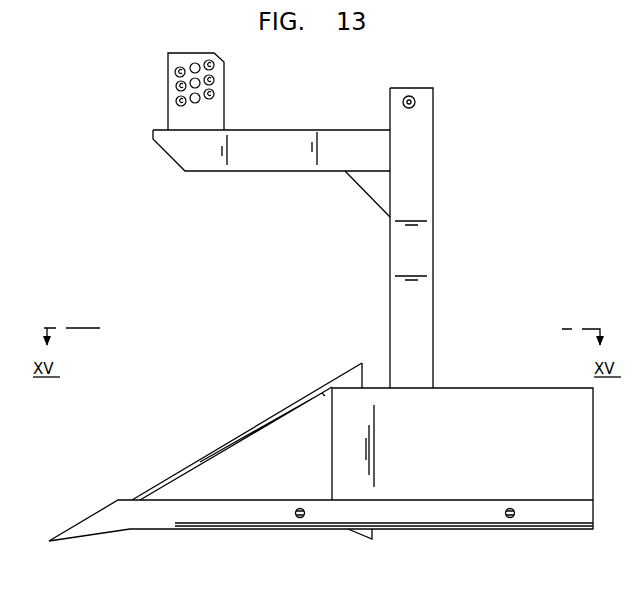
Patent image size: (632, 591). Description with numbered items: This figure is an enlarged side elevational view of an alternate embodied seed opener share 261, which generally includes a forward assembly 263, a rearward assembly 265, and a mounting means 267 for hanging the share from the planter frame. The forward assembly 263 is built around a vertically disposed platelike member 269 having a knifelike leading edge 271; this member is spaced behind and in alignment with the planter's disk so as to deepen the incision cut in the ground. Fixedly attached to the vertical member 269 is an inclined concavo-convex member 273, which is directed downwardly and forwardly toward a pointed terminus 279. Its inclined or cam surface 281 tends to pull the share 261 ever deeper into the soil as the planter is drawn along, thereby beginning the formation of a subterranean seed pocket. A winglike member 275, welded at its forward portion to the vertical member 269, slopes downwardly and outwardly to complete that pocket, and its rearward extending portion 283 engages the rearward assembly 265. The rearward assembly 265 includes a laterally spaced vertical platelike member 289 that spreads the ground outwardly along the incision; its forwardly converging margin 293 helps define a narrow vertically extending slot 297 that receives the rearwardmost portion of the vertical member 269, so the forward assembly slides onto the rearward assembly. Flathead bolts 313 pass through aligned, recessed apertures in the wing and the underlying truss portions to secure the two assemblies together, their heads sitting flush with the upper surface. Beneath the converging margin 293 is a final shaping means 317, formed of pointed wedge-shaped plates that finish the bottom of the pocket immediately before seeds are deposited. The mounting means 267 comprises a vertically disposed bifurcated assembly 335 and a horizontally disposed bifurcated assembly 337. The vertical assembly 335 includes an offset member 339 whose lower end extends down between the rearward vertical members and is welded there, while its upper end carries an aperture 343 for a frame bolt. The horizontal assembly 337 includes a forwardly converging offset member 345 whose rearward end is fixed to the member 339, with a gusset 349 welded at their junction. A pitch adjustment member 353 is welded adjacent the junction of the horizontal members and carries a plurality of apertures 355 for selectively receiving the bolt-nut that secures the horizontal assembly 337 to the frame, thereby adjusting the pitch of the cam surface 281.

The seed opener share 261 is at (57, 100).
The forward assembly 263 is at (185, 410).
The rearward assembly 265 is at (490, 366).
The mounting means 267 is at (482, 164).
The vertical platelike member 269 is at (280, 463).
The knifelike leading edge 271 is at (270, 418).
The inclined concavo-convex member 273 is at (95, 520).
The winglike member 275 is at (253, 522).
The pointed terminus 279 is at (49, 541).
The inclined or cam surface 281 is at (78, 522).
The rearward extending portion 283 is at (565, 517).
The vertical platelike member 289 is at (472, 443).
The forwardly converging margin 293 is at (348, 405).
The narrow vertically extending slot 297 is at (322, 446).
The flathead bolt 313 is at (300, 518).
The final shaping means 317 is at (366, 538).
The vertically disposed bifurcated assembly 335 is at (631, 194).
The horizontally disposed bifurcated assembly 337 is at (296, 163).
The left offset member 339 is at (422, 247).
The aperture 343 is at (412, 96).
The left offset member 345 is at (325, 148).
The gusset 349 is at (368, 194).
The pitch adjustment member 353 is at (218, 118).
The apertures 355 is at (181, 101).